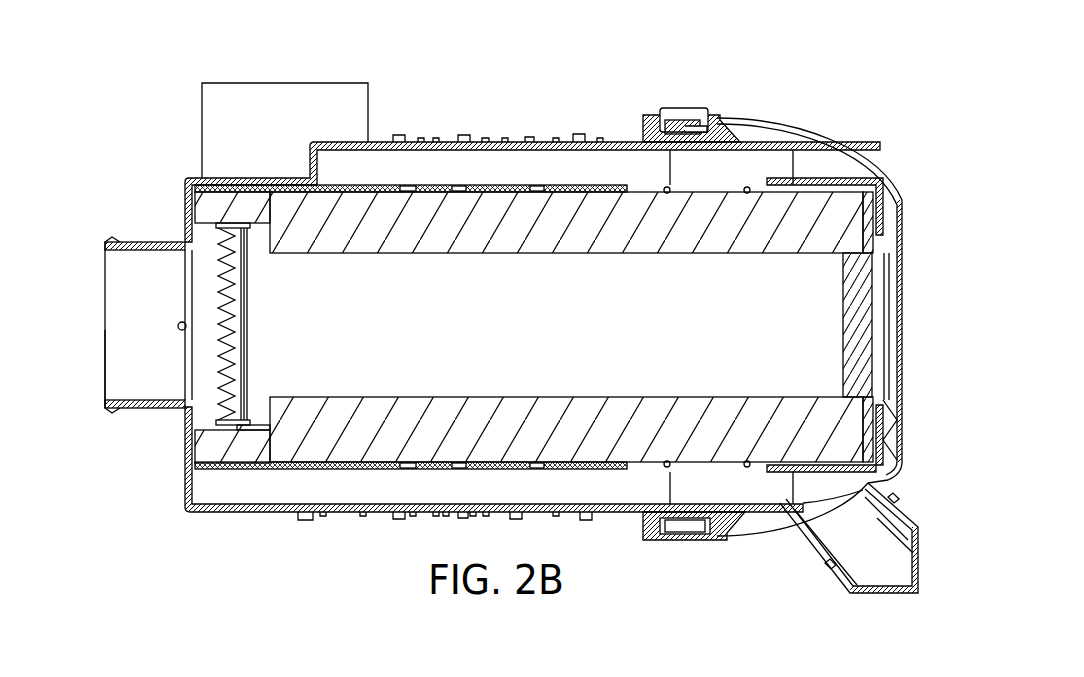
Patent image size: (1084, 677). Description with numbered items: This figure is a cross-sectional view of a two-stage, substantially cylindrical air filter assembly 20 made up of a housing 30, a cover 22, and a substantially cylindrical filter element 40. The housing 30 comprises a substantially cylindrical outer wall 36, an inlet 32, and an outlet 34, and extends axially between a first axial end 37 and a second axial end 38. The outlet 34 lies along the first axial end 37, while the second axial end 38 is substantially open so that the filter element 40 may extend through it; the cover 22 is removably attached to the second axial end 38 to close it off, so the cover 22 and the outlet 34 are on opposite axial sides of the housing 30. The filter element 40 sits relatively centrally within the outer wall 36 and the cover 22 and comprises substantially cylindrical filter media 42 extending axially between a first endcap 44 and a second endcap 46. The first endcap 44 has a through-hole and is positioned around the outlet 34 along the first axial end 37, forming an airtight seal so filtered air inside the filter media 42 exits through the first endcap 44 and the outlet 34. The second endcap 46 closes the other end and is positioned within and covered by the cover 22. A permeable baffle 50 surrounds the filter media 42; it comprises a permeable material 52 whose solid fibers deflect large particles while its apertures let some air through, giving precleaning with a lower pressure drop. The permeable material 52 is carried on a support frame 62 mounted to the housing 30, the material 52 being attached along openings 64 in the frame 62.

The air filter assembly 20 is at (755, 86).
The cover 22 is at (898, 176).
The housing 30 is at (601, 138).
The inlet 32 is at (340, 82).
The outlet 34 is at (100, 394).
The outer wall 36 is at (275, 513).
The first axial end 37 is at (103, 338).
The second axial end 38 is at (712, 128).
The filter element 40 is at (700, 470).
The filter media 42 is at (727, 441).
The first endcap 44 is at (228, 449).
The second endcap 46 is at (871, 267).
The permeable baffle 50 is at (511, 473).
The permeable material 52 is at (457, 470).
The support frame 62 is at (408, 470).
The openings 64 is at (371, 470).